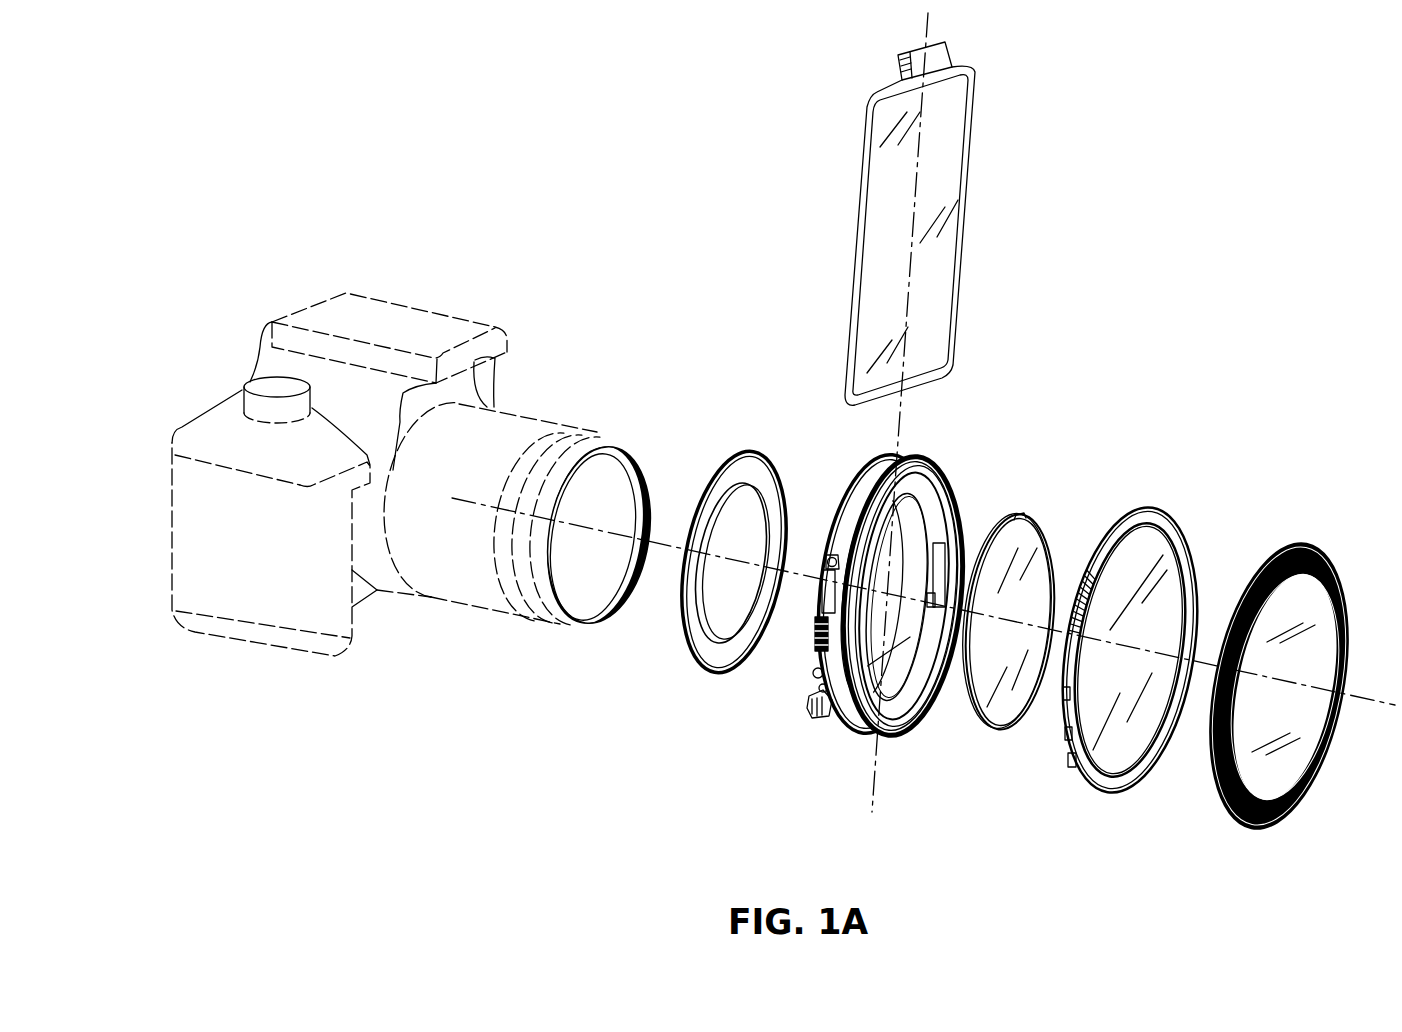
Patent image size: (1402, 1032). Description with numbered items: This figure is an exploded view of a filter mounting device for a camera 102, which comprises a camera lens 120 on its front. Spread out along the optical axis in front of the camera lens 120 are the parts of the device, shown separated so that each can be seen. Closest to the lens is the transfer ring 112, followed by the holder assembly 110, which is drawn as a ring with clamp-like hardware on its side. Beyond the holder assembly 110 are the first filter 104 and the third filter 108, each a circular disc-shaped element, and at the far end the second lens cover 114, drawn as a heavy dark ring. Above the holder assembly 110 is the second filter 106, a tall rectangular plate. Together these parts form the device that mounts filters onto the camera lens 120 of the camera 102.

The camera 102 is at (303, 312).
The camera lens 120 is at (417, 527).
The second filter 106 is at (837, 297).
The transfer ring 112 is at (690, 672).
The holder assembly 110 is at (837, 732).
The first filter 104 is at (980, 730).
The third filter 108 is at (1073, 792).
The second lens cover 114 is at (1222, 817).